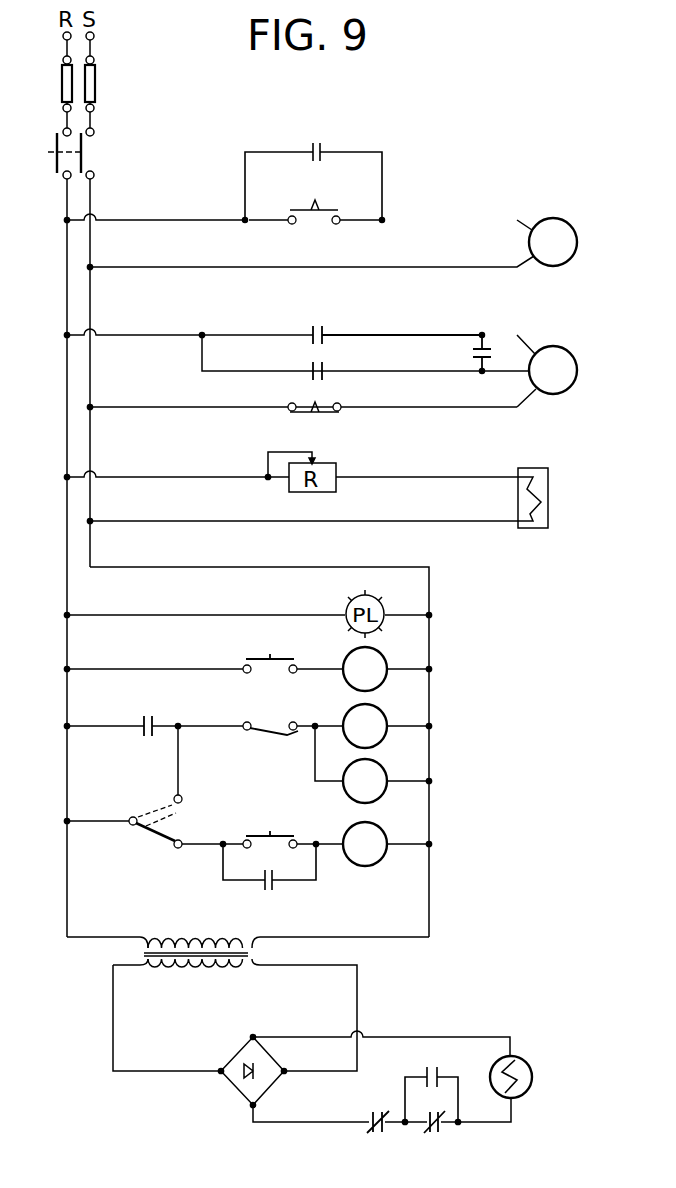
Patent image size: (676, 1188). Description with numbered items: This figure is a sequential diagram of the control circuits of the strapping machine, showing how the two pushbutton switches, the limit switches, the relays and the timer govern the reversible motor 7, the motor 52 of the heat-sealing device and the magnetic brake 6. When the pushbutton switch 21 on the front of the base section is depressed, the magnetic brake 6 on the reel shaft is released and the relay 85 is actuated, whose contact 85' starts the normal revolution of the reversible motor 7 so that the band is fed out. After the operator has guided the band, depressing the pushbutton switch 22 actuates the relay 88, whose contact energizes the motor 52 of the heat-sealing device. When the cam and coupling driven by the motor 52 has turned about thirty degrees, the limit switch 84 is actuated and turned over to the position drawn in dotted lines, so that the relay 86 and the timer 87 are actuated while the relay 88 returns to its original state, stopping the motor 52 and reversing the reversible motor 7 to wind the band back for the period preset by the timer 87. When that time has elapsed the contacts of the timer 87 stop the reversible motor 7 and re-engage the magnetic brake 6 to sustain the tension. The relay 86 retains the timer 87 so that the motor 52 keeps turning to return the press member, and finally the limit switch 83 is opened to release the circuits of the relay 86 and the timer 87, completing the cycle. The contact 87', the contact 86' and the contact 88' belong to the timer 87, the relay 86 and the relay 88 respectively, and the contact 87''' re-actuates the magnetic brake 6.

The motor 52 is at (553, 219).
The reversible motor 7 is at (555, 348).
The contact 87' is at (315, 194).
The contact 85' is at (397, 320).
The pushbutton switch 21 is at (275, 659).
The relay 85 is at (384, 680).
The relay 86 is at (384, 739).
The timer 87 is at (384, 796).
The relay 88 is at (380, 859).
The contact 86' is at (176, 709).
The limit switch 83 is at (264, 727).
The limit switch 84 is at (146, 829).
The pushbutton switch 22 is at (275, 832).
The contact 88' is at (283, 882).
The contact 87''' is at (436, 1062).
The magnetic brake 6 is at (522, 1063).